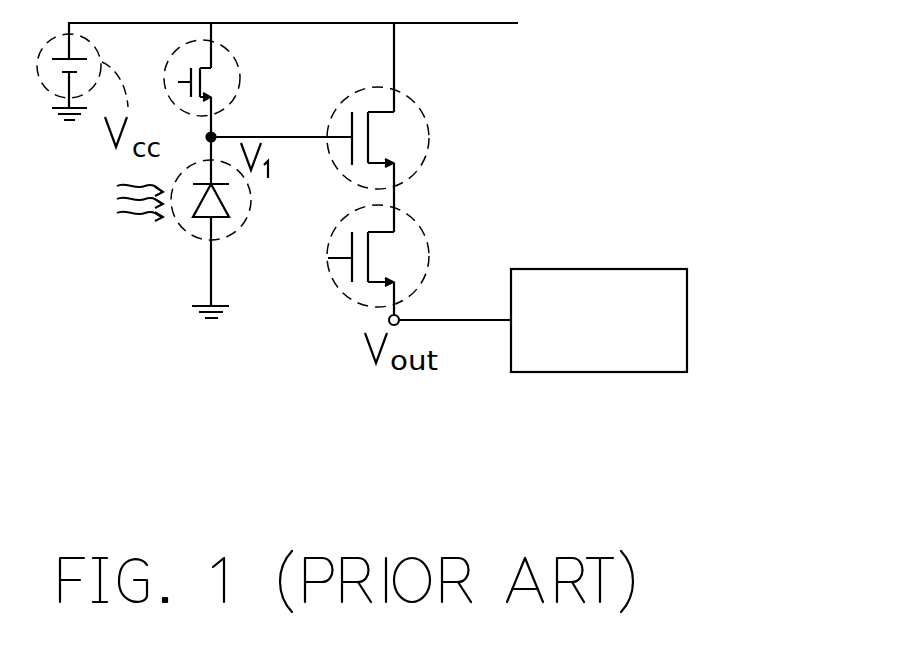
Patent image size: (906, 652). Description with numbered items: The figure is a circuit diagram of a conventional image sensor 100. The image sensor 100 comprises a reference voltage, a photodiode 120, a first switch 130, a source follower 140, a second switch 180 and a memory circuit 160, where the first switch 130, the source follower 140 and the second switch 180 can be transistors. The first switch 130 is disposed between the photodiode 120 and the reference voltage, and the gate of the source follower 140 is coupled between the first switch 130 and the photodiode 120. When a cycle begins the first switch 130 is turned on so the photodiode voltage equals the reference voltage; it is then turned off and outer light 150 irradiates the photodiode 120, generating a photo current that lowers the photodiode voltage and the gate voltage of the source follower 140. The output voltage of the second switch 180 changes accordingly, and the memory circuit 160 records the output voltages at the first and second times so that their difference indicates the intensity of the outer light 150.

The image sensor 100 is at (277, 236).
The photodiode 120 is at (285, 263).
The first switch 130 is at (480, 53).
The source follower 140 is at (510, 127).
The outer light 150 is at (138, 268).
The memory circuit 160 is at (748, 310).
The second switch 180 is at (530, 198).